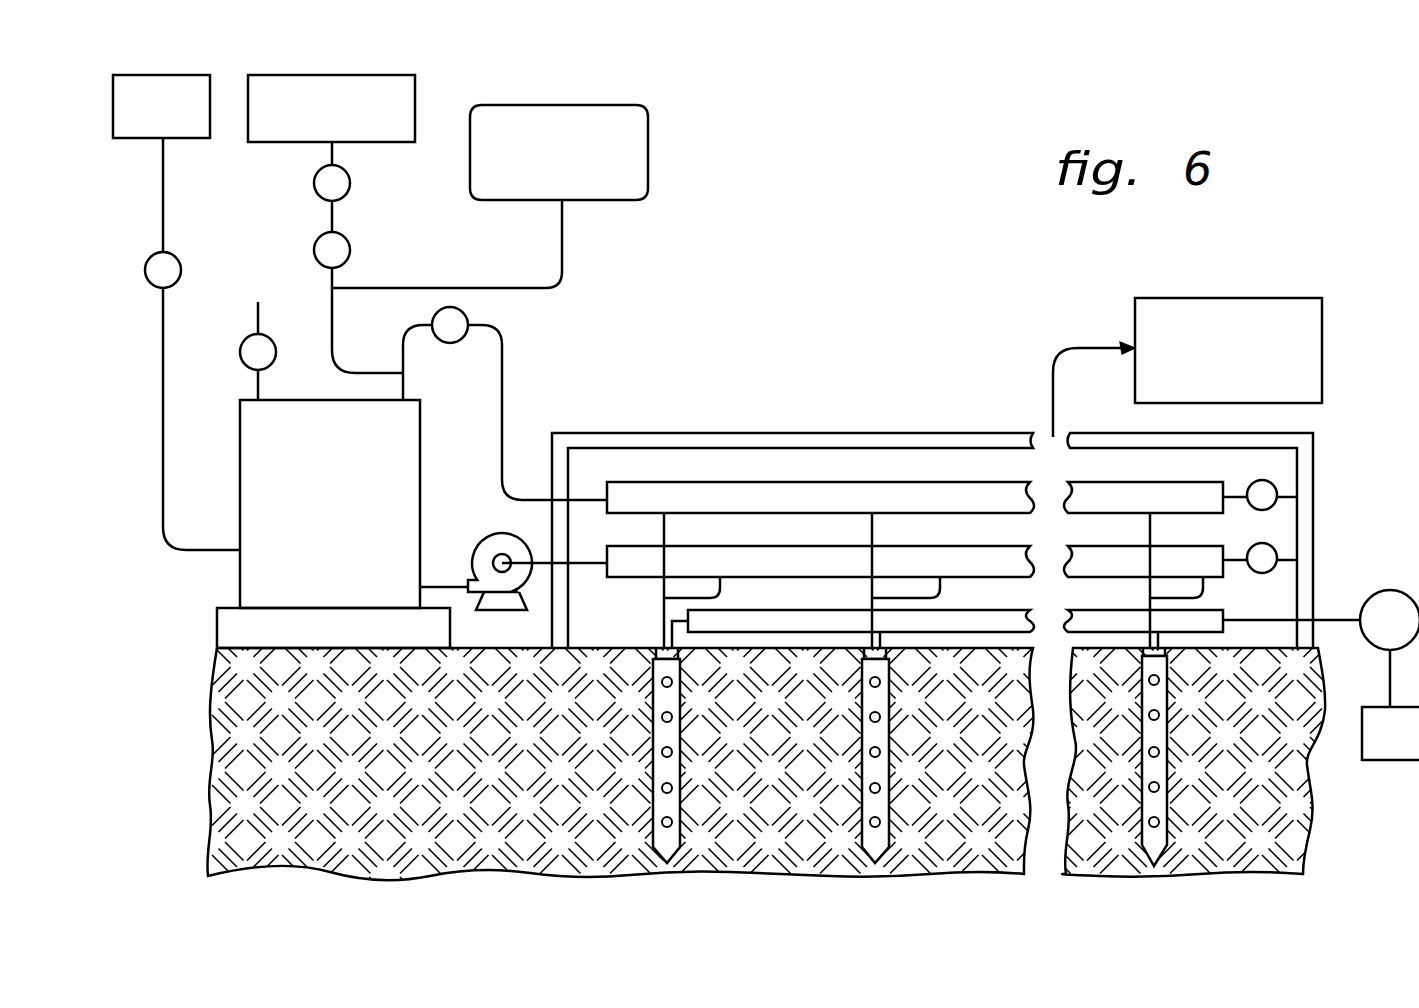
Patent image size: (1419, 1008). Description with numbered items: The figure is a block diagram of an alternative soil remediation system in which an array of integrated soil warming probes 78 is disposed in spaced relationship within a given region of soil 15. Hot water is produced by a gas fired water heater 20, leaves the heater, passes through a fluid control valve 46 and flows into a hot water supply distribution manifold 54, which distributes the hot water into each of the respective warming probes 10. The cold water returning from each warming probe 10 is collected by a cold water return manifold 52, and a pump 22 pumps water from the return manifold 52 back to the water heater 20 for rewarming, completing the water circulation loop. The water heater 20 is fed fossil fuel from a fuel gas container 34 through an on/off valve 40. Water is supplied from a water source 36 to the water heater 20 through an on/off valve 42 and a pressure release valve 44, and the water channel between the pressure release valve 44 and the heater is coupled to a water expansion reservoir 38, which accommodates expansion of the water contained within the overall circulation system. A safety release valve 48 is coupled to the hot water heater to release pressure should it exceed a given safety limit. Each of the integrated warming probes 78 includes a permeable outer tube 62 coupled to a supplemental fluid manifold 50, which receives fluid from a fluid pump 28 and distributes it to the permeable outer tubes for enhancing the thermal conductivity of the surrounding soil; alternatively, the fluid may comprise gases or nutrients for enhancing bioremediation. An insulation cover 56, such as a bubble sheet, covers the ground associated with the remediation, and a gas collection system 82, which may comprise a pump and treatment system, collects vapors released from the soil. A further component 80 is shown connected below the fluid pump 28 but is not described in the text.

The warming probe 10 is at (652, 764).
The soil 15 is at (790, 743).
The gas fired water heater 20 is at (420, 548).
The pump 22 is at (525, 535).
The fluid pump 28 is at (1390, 590).
The fuel gas container 34 is at (152, 139).
The water source 36 is at (378, 142).
The water expansion reservoir 38 is at (648, 163).
The on/off valve 40 is at (181, 265).
The on/off valve 42 is at (314, 183).
The pressure release valve 44 is at (350, 248).
The fluid control valve 46 is at (448, 343).
The safety release valve 48 is at (240, 352).
The supplemental fluid manifold 50 is at (985, 610).
The cold water return manifold 52 is at (975, 546).
The hot water supply distribution manifold 54 is at (975, 482).
The insulation cover 56 is at (890, 432).
The permeable outer tube 62 is at (670, 728).
The integrated soil warming probe 78 is at (648, 732).
The gas storage / flare 80 is at (1385, 762).
The gas collection system 82 is at (1207, 298).